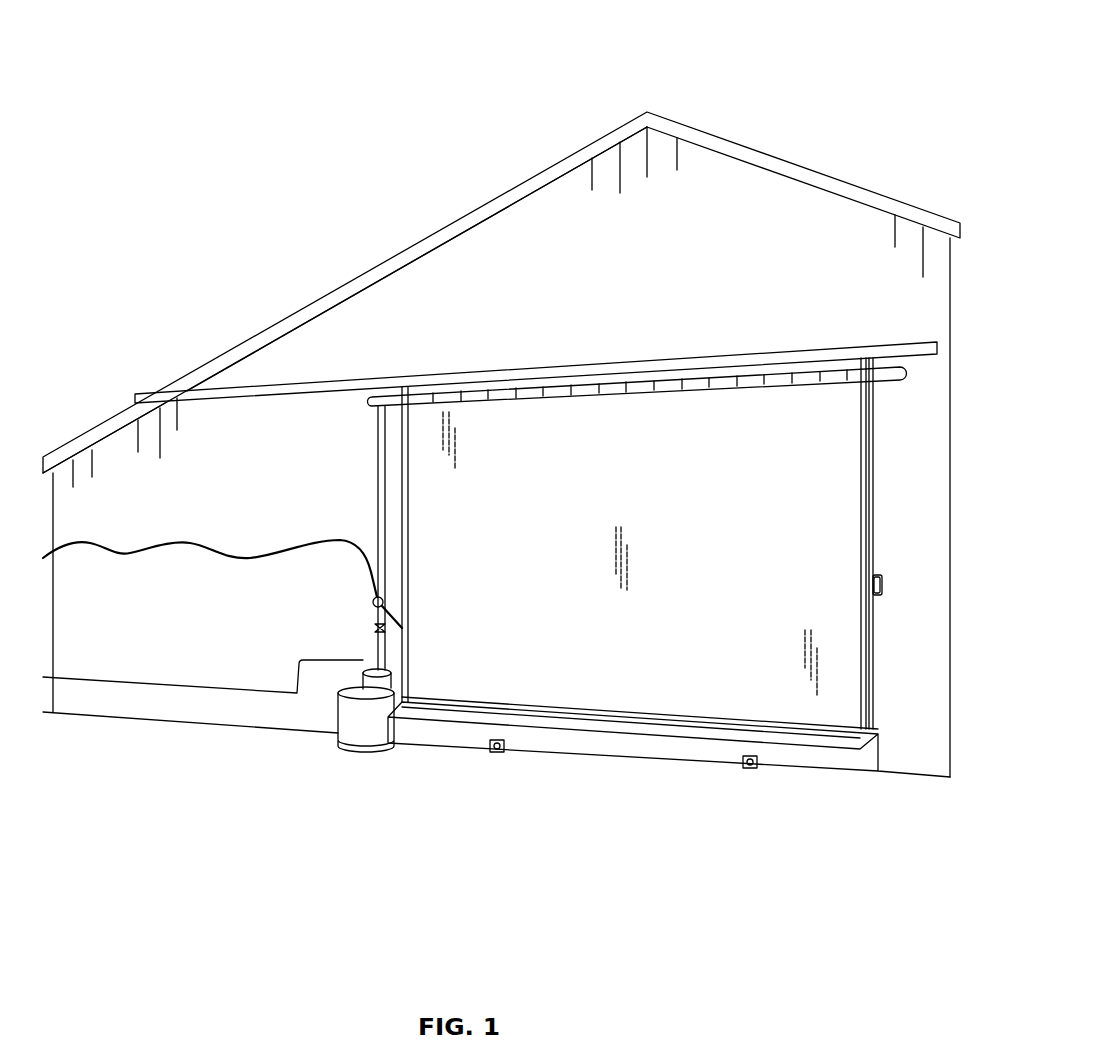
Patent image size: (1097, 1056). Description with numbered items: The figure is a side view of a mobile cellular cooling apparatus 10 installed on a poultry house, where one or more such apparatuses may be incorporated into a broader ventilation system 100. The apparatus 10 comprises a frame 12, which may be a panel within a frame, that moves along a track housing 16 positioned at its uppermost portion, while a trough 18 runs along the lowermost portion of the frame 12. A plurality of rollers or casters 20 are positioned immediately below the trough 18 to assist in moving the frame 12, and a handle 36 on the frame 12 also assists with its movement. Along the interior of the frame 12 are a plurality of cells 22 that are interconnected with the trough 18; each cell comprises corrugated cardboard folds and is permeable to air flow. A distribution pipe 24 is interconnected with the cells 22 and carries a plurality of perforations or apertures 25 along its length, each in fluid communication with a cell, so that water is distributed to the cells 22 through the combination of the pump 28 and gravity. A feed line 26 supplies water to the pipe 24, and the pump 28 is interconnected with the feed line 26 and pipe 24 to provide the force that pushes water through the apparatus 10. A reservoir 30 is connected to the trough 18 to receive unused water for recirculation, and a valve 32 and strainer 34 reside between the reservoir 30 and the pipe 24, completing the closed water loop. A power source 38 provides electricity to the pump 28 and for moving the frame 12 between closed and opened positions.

The ventilation system 100 is at (578, 148).
The mobile cellular cooling apparatus 10 is at (677, 292).
The frame 12 is at (875, 668).
The track housing 16 is at (308, 378).
The trough 18 is at (580, 737).
The rollers or casters 20 is at (492, 758).
The cells 22 is at (758, 638).
The pipe 24 is at (722, 375).
The perforations or apertures 25 is at (598, 390).
The feed line 26 is at (150, 547).
The pump 28 is at (353, 675).
The reservoir 30 is at (342, 752).
The valve 32 is at (373, 628).
The strainer 34 is at (371, 602).
The handle 36 is at (885, 583).
The source 38 is at (97, 678).